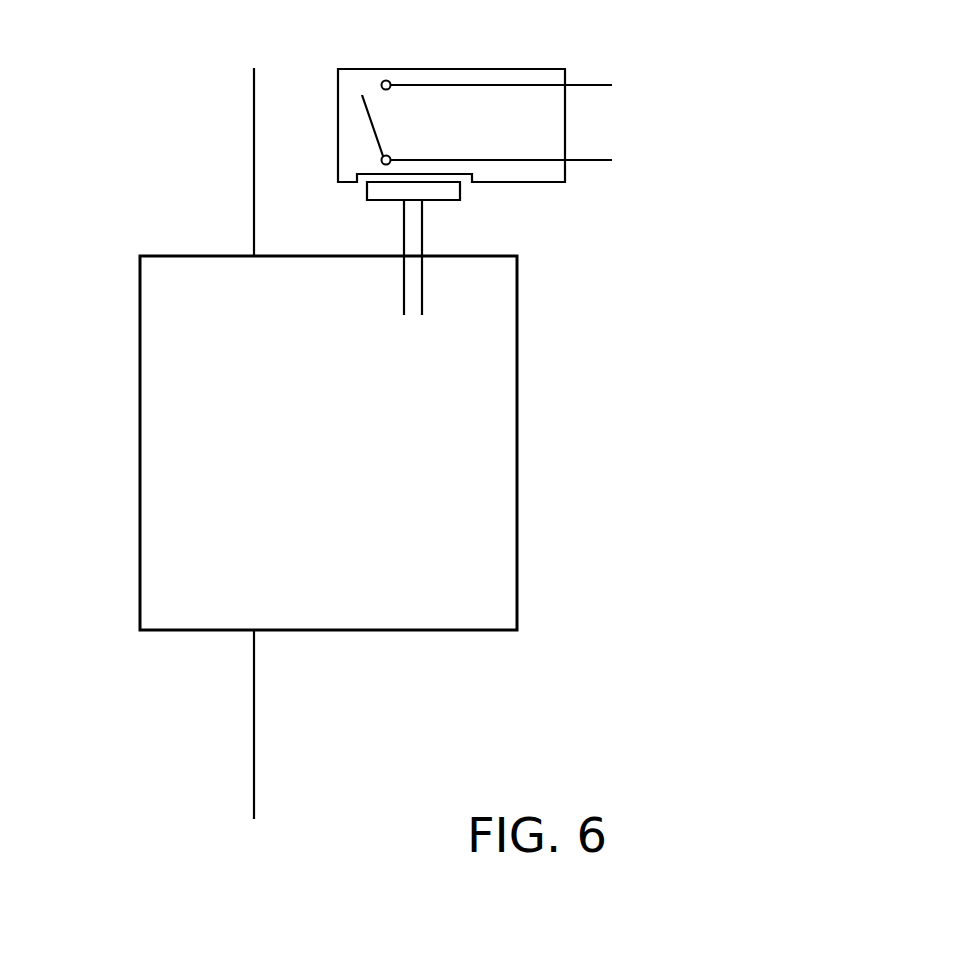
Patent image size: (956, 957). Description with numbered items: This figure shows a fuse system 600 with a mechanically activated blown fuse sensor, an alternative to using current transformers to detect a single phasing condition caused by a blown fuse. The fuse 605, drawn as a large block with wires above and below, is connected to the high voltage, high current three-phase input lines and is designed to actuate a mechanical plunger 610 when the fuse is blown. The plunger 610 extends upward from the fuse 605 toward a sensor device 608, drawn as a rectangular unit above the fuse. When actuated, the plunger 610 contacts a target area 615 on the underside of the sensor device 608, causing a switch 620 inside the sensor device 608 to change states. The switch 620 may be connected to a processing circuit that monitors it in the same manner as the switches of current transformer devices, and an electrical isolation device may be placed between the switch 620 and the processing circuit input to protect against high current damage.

The fuse system 600 is at (103, 182).
The fuse 605 is at (157, 365).
The sensor device 608 is at (515, 78).
The mechanical plunger 610 is at (412, 238).
The target area 615 is at (455, 174).
The switch 620 is at (362, 113).